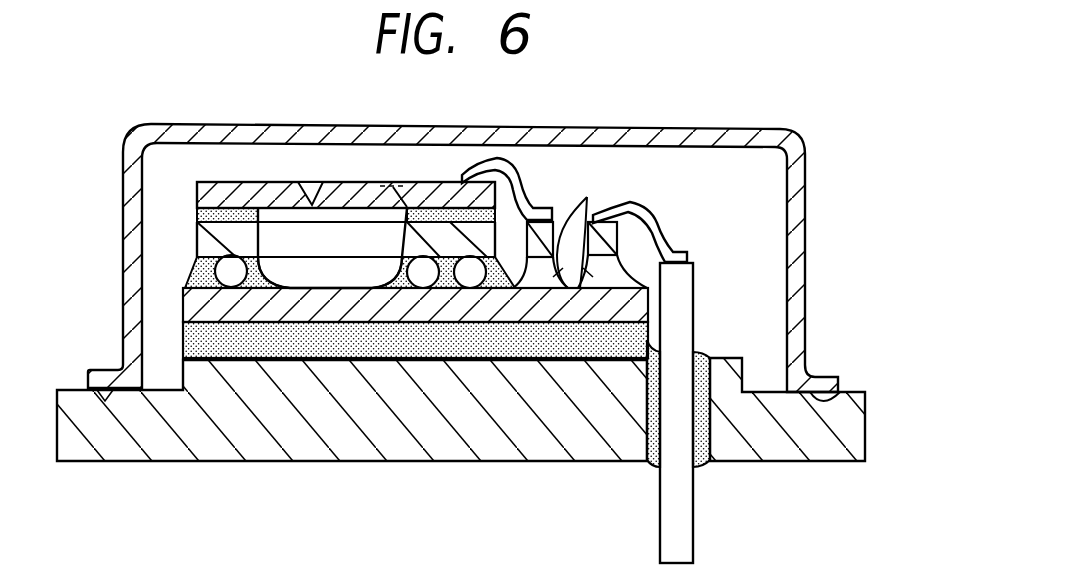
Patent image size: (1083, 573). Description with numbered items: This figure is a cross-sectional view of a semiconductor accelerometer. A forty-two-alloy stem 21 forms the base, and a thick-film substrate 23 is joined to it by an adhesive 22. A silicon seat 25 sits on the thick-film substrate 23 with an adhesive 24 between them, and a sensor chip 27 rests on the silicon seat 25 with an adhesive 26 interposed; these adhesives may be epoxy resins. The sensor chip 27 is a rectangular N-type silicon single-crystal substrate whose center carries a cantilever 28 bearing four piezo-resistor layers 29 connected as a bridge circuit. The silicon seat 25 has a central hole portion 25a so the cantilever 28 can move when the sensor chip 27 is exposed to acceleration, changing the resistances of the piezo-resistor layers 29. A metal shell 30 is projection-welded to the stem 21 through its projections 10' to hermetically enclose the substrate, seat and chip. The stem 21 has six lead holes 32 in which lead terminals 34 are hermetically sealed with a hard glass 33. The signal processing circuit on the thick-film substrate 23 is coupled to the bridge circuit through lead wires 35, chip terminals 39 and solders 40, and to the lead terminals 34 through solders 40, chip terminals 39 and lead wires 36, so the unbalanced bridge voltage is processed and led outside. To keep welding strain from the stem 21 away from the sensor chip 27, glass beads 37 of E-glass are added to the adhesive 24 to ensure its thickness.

The projection 10' is at (861, 373).
The stem 21 is at (415, 461).
The adhesive 22 is at (188, 337).
The thick-film substrate 23 is at (185, 308).
The adhesive 24 is at (197, 266).
The silicon seat 25 is at (198, 234).
The hole portion 25a is at (263, 245).
The adhesive 26 is at (197, 210).
The sensor chip 27 is at (210, 193).
The cantilever 28 is at (327, 200).
The piezo-resistor layers 29 is at (382, 183).
The shell 30 is at (693, 128).
The lead holes 32 is at (700, 467).
The hard glass 33 is at (654, 469).
The lead terminals 34 is at (694, 533).
The lead wires 35 is at (517, 175).
The lead wires 36 is at (638, 203).
The glass beads 37 is at (232, 262).
The chip terminals 39 is at (582, 229).
The solders 40 is at (573, 242).